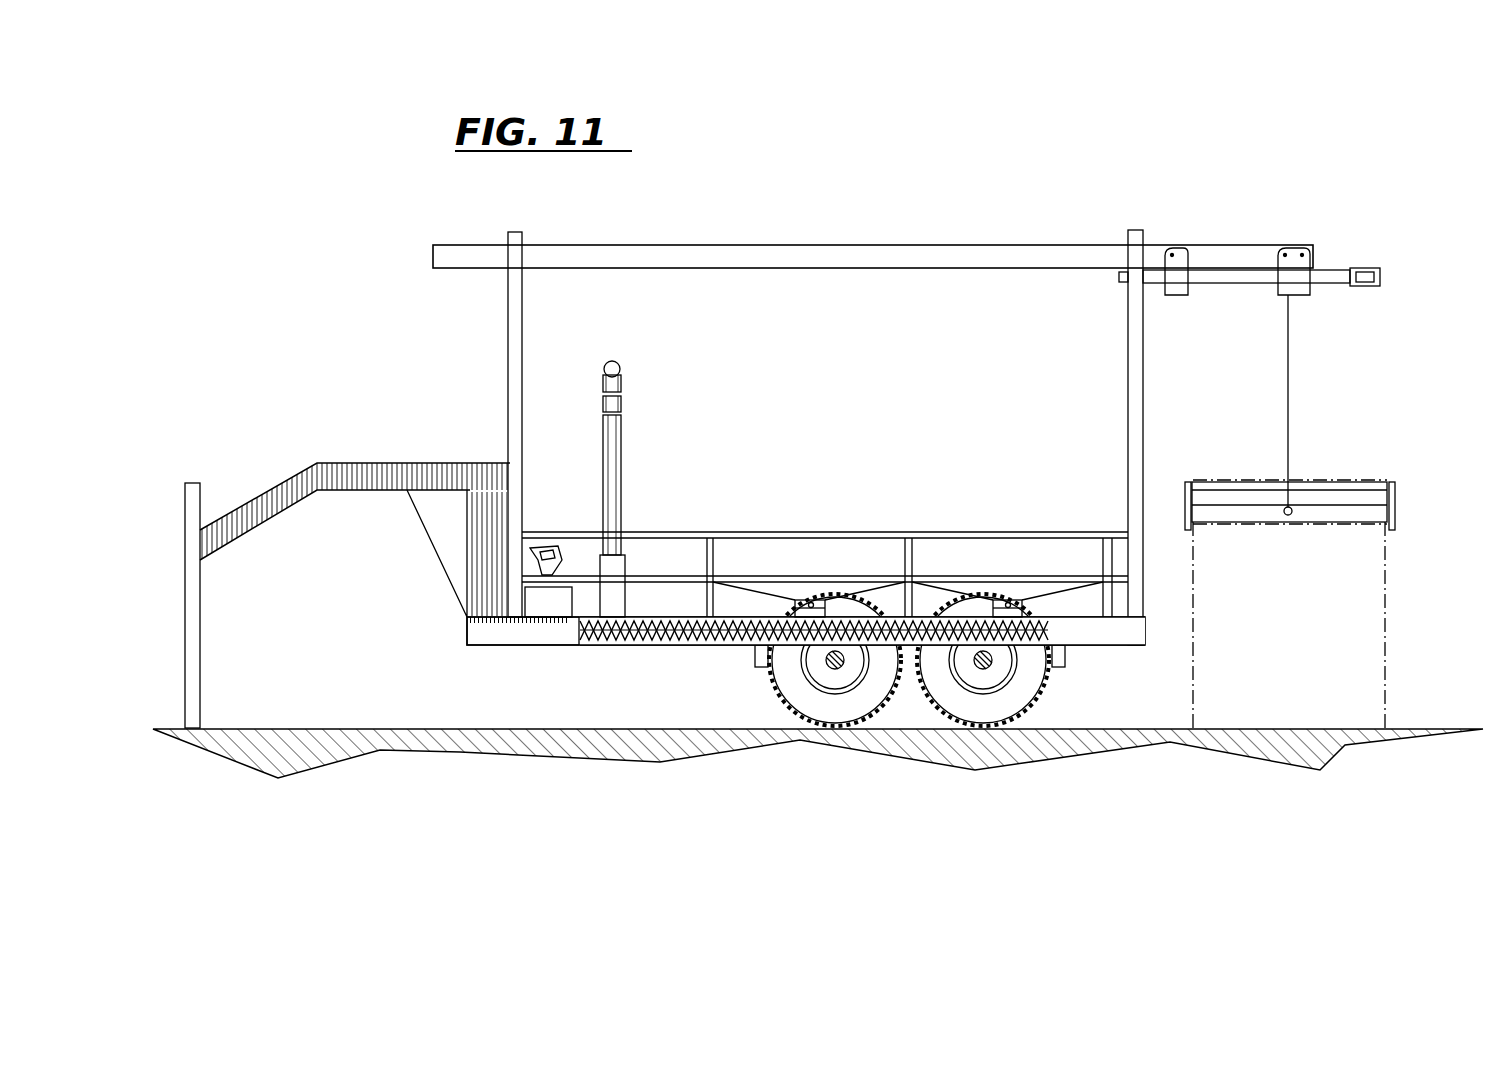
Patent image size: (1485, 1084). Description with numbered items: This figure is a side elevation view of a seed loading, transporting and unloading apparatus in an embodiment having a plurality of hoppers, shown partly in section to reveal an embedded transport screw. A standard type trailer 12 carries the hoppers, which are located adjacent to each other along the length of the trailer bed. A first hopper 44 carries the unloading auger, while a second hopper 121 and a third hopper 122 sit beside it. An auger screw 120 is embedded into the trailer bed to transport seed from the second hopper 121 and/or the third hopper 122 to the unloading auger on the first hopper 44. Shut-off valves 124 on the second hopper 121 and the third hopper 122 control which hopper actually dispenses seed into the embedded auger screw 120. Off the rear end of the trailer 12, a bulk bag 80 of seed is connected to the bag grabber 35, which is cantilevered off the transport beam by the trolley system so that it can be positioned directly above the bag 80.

The trailer 12 is at (1098, 634).
The bag grabber 35 is at (1397, 514).
The first hopper 44 is at (667, 565).
The bag 80 is at (1340, 587).
The auger screw 120 is at (640, 647).
The second hopper 121 is at (797, 590).
The third hopper 122 is at (967, 575).
The shut-off valves 124 is at (792, 598).